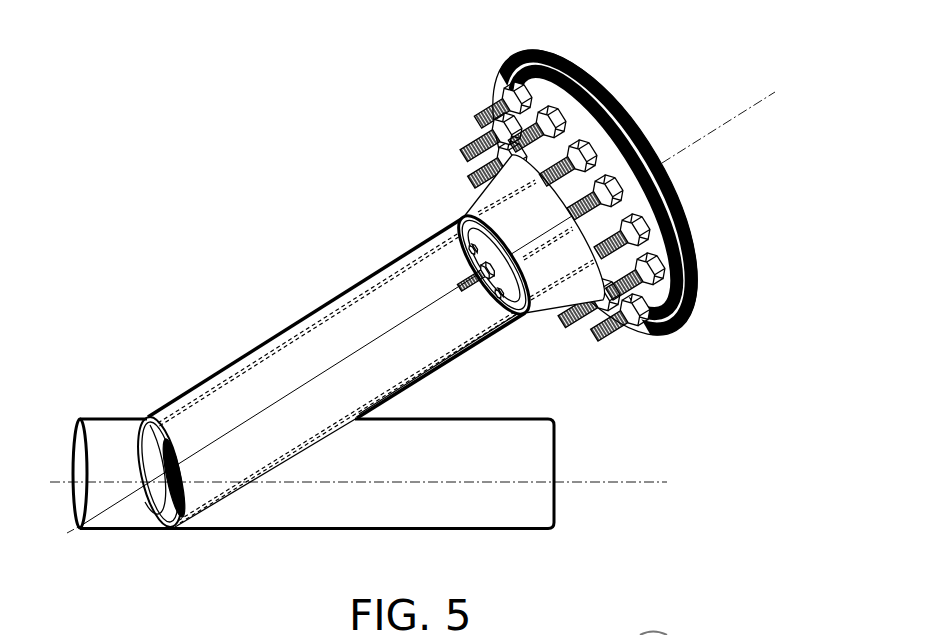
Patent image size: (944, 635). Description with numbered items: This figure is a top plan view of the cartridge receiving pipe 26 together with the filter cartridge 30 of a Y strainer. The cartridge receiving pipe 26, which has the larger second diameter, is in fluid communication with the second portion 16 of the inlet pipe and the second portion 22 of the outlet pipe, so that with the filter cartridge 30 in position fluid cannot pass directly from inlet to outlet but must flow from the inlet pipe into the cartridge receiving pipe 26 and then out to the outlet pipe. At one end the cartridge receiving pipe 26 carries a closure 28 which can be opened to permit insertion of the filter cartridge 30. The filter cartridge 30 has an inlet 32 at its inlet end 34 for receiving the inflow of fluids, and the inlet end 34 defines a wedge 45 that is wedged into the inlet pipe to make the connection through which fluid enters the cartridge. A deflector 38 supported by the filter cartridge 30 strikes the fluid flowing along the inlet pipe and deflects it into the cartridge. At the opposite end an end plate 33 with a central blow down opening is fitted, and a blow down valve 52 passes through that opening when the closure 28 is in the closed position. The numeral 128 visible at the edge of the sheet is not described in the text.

The second portion of the inlet pipe 16 is at (82, 462).
The second portion of the outlet pipe 22 is at (555, 500).
The cartridge receiving pipe 26 is at (262, 345).
The closure 28 is at (627, 119).
The filter cartridge 30 is at (452, 359).
The inlet 32 is at (145, 428).
The end plate 33 is at (466, 250).
The inlet end 34 is at (174, 416).
The deflector 38 is at (184, 466).
The wedge 45 is at (147, 503).
The blow down valve 52 is at (511, 317).
The component of adjacent figure 128 is at (701, 634).